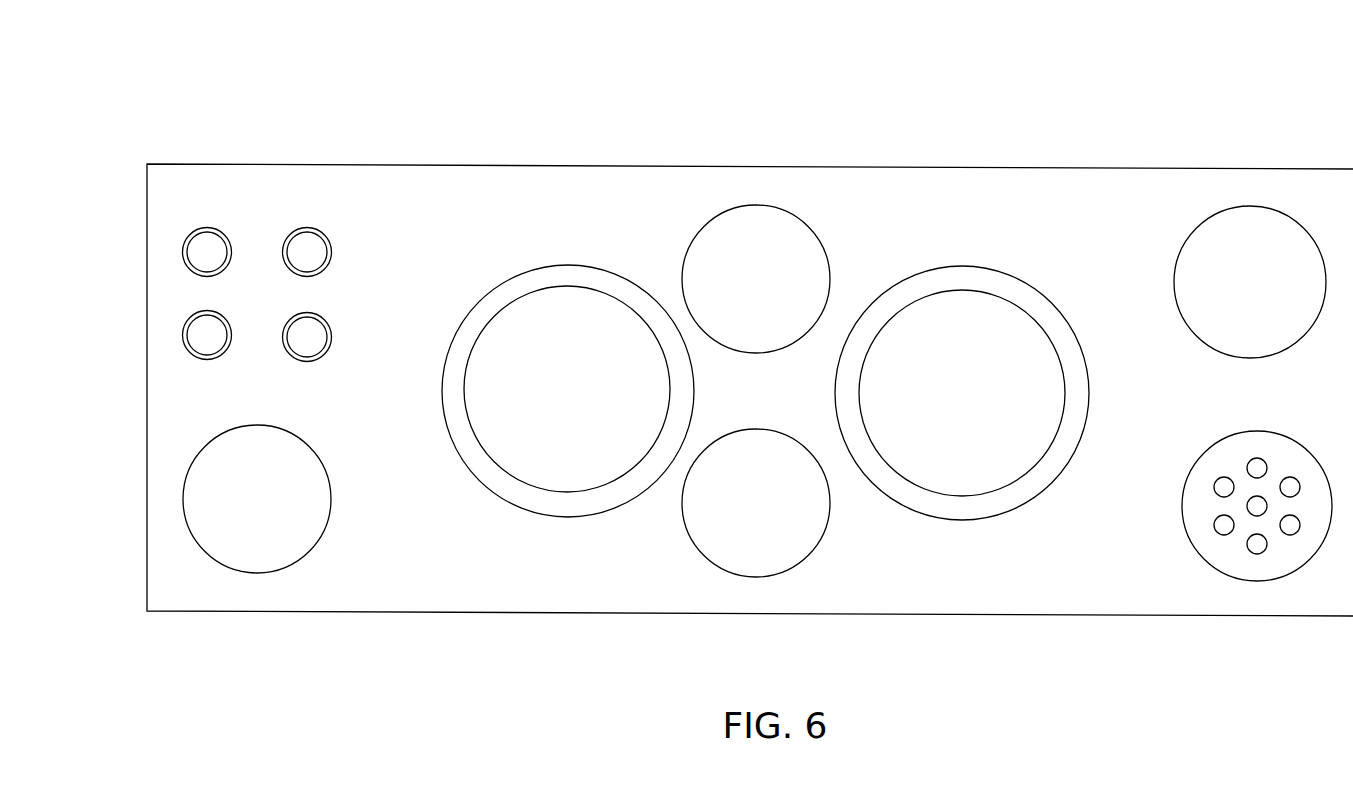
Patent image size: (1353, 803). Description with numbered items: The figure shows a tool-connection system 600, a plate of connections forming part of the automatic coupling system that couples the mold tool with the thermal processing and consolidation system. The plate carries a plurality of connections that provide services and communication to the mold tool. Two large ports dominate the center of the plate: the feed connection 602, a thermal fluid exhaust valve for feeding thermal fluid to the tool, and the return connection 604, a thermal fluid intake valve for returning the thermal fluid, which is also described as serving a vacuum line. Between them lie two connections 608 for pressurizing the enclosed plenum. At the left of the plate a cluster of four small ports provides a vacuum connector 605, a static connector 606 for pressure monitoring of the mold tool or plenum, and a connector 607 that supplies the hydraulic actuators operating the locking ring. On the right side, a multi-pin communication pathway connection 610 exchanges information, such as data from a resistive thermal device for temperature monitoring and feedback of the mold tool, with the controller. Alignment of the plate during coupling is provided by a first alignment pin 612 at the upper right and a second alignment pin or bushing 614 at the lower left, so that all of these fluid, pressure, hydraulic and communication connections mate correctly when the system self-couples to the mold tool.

The tool-connection system 600 is at (1236, 82).
The thermal fluid feed connection 602 is at (1112, 487).
The thermal fluid return connection 604 is at (568, 391).
The vacuum connector 605 is at (184, 342).
The static connector 606 is at (191, 233).
The hydraulic actuator connector 607 is at (328, 265).
The plenum pressurizing connection 608 is at (756, 391).
The communication pathway connection 610 is at (1206, 561).
The first alignment pin 612 is at (1250, 282).
The second alignment pin or bushing 614 is at (257, 499).